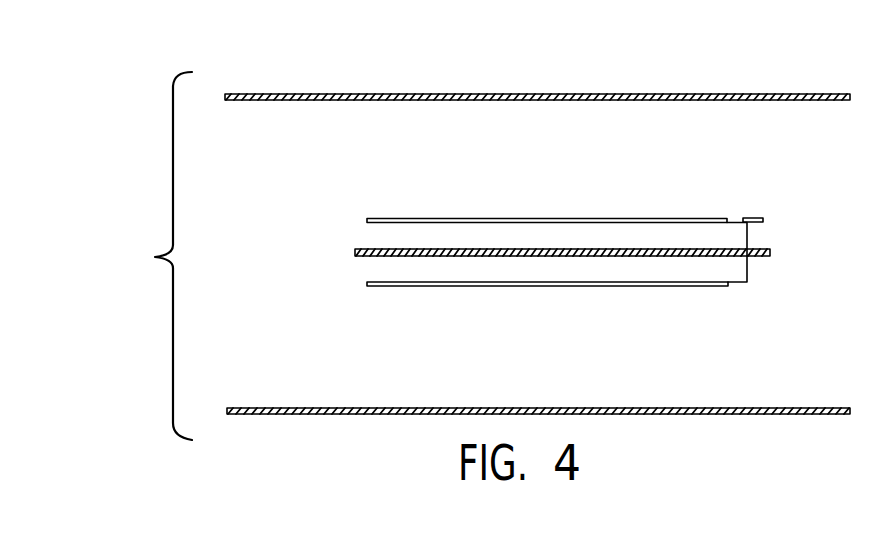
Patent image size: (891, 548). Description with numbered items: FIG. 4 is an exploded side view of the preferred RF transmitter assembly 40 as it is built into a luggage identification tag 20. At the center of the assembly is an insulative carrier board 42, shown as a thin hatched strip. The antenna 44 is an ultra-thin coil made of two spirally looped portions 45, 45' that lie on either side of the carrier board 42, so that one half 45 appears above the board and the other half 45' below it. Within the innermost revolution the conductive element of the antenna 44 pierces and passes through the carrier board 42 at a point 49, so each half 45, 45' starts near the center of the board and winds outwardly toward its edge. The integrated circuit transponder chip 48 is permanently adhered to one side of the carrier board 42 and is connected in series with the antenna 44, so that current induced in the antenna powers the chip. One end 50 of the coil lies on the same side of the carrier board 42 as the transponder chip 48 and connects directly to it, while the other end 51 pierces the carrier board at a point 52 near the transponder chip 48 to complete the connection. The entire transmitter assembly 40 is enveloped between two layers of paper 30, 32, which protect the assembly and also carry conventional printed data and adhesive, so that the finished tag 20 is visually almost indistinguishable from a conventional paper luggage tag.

The paper tag 20 is at (154, 256).
The layer of paper 30 is at (692, 94).
The layer of paper 32 is at (335, 415).
The RF transmitter assembly 40 is at (610, 296).
The insulative carrier board 42 is at (355, 251).
The antenna 44 is at (570, 218).
The spirally looped portion 45 is at (403, 175).
The spirally looped portion 45' is at (547, 330).
The integrated circuit transponder chip 48 is at (760, 216).
The piercing point 49 is at (467, 281).
The antenna coil end 50 is at (735, 218).
The antenna coil end 51 is at (749, 232).
The piercing point 52 is at (750, 256).